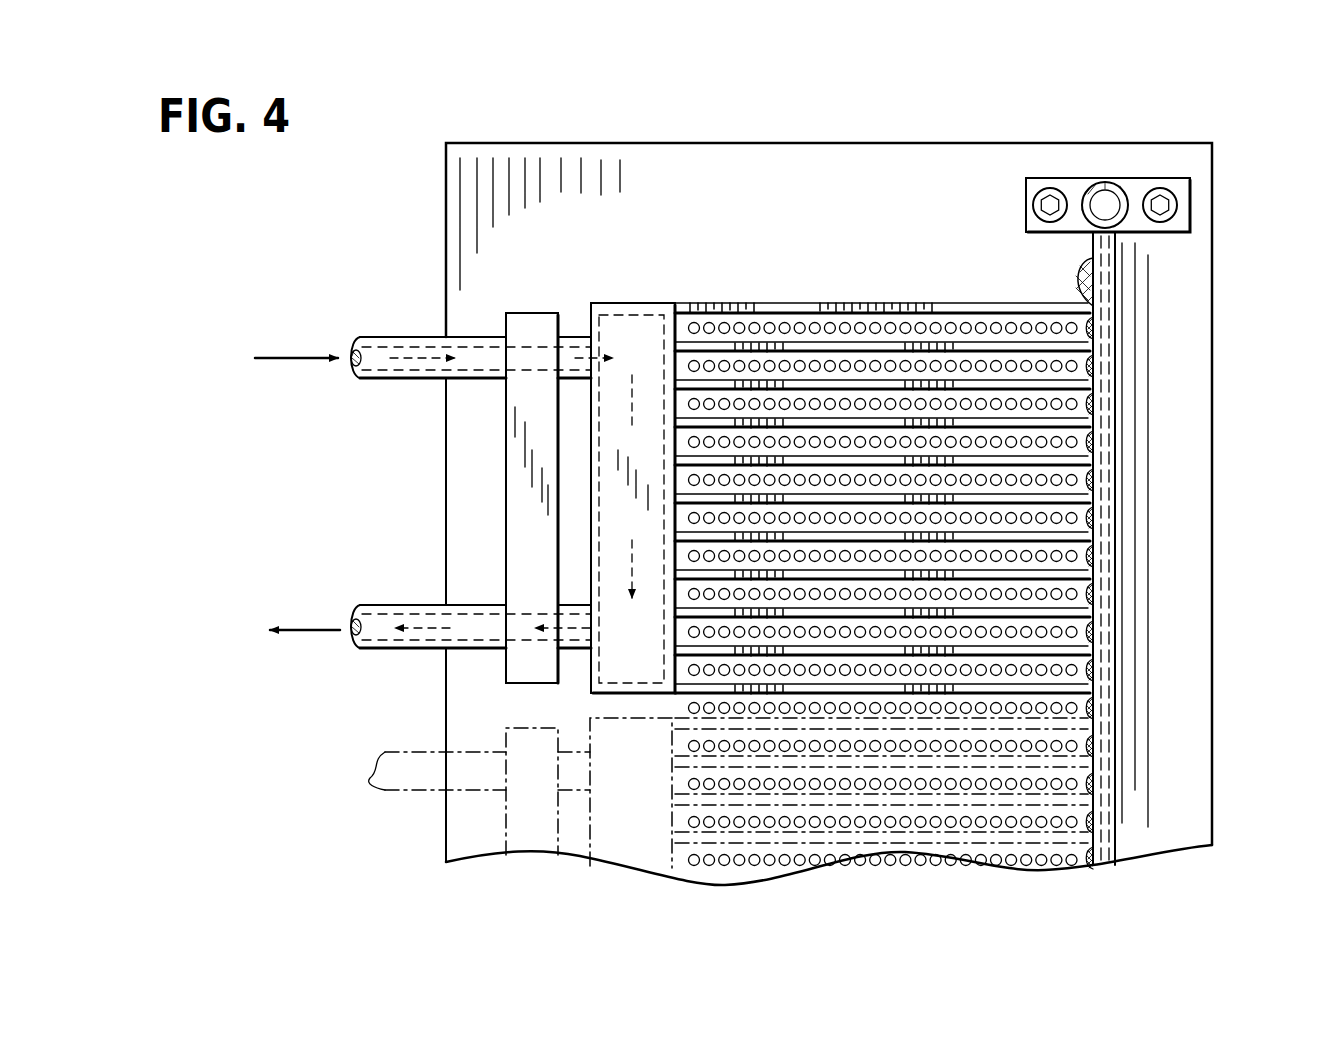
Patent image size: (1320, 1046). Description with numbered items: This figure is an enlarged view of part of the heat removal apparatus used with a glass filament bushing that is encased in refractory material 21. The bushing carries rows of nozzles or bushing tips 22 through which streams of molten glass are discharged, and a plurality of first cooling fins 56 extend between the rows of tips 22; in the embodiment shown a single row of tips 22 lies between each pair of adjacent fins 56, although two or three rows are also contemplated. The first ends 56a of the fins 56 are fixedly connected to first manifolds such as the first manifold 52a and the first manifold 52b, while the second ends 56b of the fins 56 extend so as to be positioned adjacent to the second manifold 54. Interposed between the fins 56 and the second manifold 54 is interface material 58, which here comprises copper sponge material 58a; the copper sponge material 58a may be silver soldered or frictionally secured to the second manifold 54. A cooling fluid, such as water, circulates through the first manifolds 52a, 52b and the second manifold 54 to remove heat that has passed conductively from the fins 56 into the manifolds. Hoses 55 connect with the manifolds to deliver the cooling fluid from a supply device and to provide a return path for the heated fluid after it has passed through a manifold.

The refractory material 21 is at (1195, 548).
The bushing tips 22 is at (932, 365).
The first manifold 52a is at (625, 325).
The first manifold 52b is at (635, 842).
The second manifold 54 is at (1100, 362).
The hoses 55 is at (385, 620).
The first cooling fins 56 is at (816, 388).
The first ends of the fins 56a is at (740, 385).
The second ends of the fins 56b is at (1090, 420).
The interface material 58 is at (1073, 272).
The copper sponge material 58a is at (1090, 705).